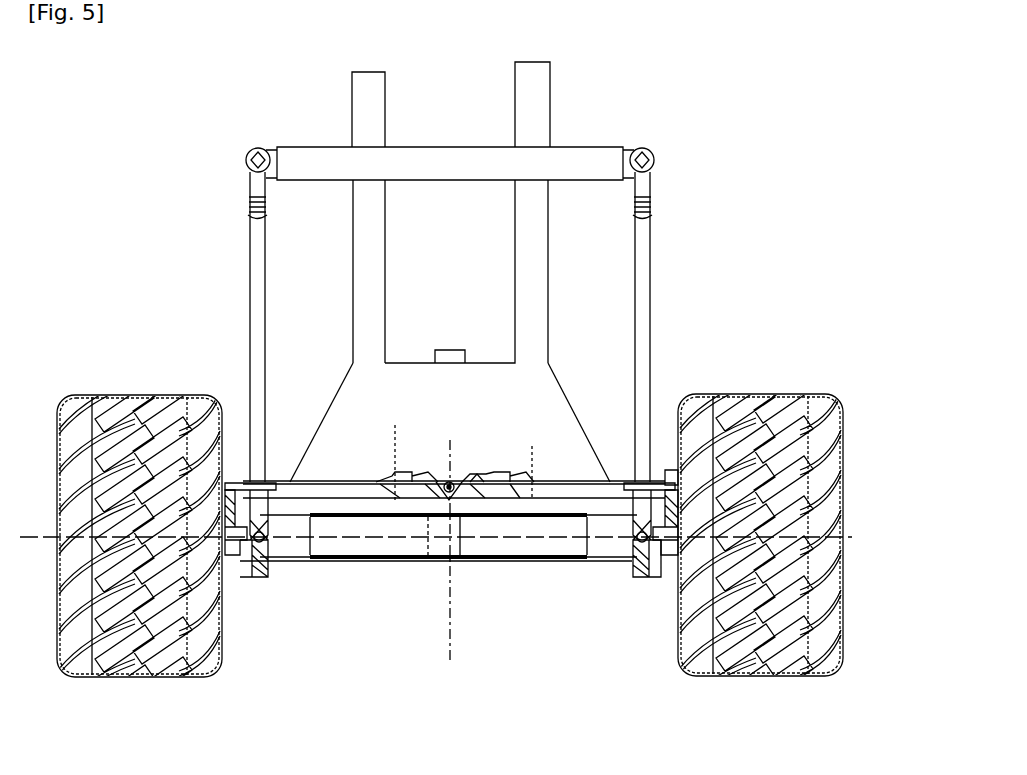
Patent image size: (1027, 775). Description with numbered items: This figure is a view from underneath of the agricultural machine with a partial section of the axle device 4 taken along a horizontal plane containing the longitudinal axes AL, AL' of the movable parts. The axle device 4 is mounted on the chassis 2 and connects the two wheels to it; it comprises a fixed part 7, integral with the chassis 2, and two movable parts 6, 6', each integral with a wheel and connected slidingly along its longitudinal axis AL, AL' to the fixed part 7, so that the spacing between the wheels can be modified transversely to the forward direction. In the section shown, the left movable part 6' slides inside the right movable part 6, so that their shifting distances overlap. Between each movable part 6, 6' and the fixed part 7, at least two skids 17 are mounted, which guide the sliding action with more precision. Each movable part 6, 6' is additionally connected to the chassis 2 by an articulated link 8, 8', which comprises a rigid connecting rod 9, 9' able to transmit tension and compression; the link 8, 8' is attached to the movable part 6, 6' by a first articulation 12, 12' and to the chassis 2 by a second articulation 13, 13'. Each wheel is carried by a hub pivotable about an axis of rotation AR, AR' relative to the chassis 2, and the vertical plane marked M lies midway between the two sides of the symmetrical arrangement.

The chassis 2 is at (435, 396).
The axle device 4 is at (448, 576).
The right movable part 6 is at (369, 555).
The left movable part 6' is at (523, 555).
The fixed part 7 is at (410, 560).
The articulated link 8 is at (307, 422).
The rigid connecting rod 9 is at (307, 422).
The articulated link 8' is at (595, 422).
The rigid connecting rod 9' is at (595, 422).
The first articulation 12 is at (291, 567).
The first articulation 12' is at (618, 555).
The second articulation 13 is at (667, 288).
The second articulation 13' is at (224, 294).
The skid 17 is at (306, 515).
The longitudinal axis AL is at (436, 472).
The longitudinal axis AL' is at (487, 449).
The axis of rotation AR is at (262, 571).
The axis of rotation AR' is at (649, 551).
The median plane M is at (452, 637).